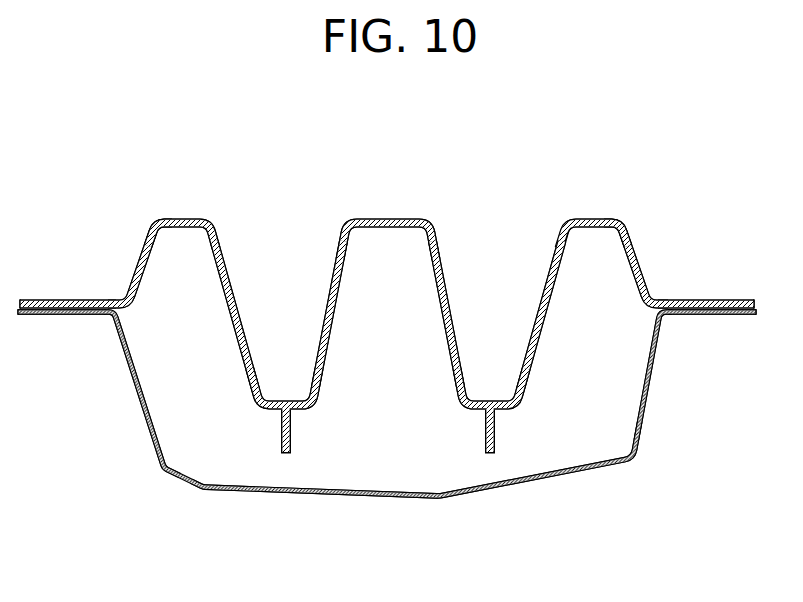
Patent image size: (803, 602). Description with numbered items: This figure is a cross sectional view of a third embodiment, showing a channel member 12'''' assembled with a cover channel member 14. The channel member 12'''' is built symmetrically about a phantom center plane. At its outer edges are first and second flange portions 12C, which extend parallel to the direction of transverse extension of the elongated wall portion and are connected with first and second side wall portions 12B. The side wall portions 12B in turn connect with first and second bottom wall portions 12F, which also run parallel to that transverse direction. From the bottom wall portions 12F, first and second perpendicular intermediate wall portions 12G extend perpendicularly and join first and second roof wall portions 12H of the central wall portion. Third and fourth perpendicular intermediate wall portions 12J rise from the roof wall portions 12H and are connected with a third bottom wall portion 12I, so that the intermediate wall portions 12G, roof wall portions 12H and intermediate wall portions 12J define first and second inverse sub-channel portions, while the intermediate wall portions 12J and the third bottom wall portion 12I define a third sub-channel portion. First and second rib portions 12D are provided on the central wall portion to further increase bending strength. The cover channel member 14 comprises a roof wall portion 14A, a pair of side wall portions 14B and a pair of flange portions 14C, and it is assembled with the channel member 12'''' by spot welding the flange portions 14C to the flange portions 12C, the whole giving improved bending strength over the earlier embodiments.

The channel member 12'''' is at (387, 298).
The first and second bottom wall portions 12F is at (186, 218).
The third bottom wall portion 12I is at (388, 218).
The first and second flange portions 12C is at (70, 298).
The first and second side wall portions 12B is at (147, 268).
The third and fourth perpendicular intermediate wall portions 12J is at (329, 315).
The first and second perpendicular intermediate wall portions 12G is at (242, 352).
The first and second roof wall portions 12H is at (296, 415).
The first and second rib portions 12D is at (282, 450).
The cover channel member 14 is at (160, 478).
The roof wall portion 14A is at (395, 500).
The side wall portions 14B is at (144, 405).
The flange portions 14C is at (47, 317).